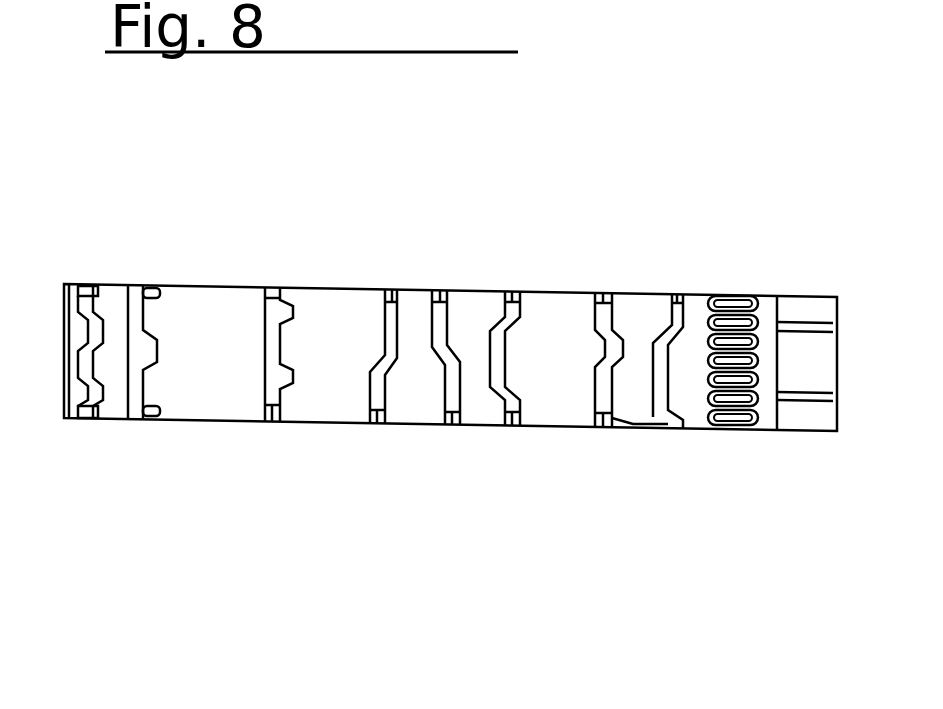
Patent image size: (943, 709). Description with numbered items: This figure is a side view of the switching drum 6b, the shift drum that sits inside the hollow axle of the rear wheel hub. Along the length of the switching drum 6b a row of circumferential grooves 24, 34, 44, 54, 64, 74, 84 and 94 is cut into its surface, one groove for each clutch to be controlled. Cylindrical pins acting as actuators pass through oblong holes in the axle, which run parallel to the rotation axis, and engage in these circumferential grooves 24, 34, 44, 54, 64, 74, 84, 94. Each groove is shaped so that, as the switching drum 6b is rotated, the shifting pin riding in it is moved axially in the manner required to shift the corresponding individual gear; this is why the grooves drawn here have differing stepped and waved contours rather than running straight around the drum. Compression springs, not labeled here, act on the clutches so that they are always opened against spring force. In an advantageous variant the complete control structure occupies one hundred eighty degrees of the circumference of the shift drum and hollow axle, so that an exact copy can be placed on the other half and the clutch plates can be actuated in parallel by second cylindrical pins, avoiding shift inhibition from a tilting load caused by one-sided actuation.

The switching drum 6b is at (557, 308).
The circumferential groove 24 is at (88, 425).
The circumferential groove 34 is at (138, 427).
The circumferential groove 44 is at (277, 425).
The circumferential groove 54 is at (377, 430).
The circumferential groove 64 is at (452, 430).
The circumferential groove 74 is at (517, 433).
The circumferential groove 84 is at (618, 437).
The circumferential groove 94 is at (672, 438).